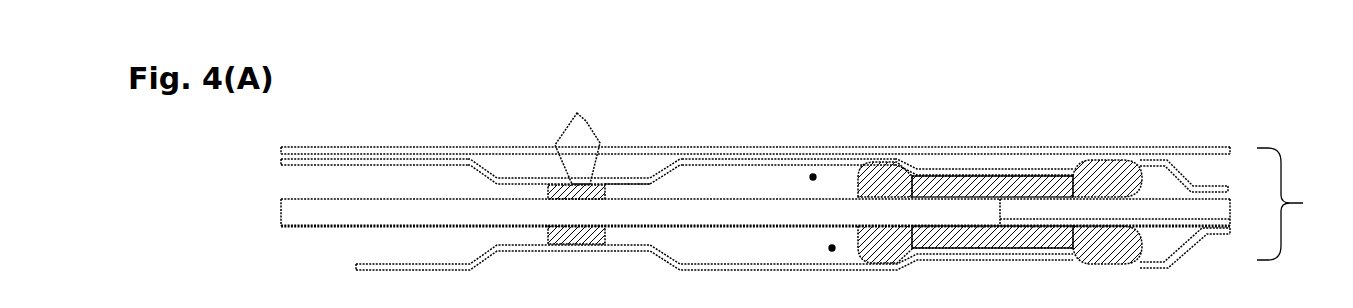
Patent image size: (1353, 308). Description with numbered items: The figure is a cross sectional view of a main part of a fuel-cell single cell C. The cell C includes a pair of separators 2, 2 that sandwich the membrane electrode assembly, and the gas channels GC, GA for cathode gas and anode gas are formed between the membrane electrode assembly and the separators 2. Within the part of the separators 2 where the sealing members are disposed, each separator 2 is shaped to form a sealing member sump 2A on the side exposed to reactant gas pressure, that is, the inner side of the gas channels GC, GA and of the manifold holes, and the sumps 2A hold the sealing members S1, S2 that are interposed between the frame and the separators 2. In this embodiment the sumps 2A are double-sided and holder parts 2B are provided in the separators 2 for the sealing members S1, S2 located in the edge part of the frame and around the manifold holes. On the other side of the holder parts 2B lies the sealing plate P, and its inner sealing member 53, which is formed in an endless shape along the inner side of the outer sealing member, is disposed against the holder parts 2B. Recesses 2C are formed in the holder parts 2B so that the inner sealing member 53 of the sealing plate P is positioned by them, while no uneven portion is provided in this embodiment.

The separator 2 is at (355, 162).
The sealing member sump 2A is at (553, 183).
The holder part 2B is at (957, 247).
The recess 2C is at (575, 184).
The inner sealing member 53 is at (583, 124).
The sealing member S1 is at (605, 188).
The sealing member S2 is at (1020, 231).
The gas channel for cathode gas GC is at (813, 177).
The gas channel for anode gas GA is at (832, 250).
The sealing plate P is at (1215, 143).
The fuel-cell single cell C is at (1299, 204).